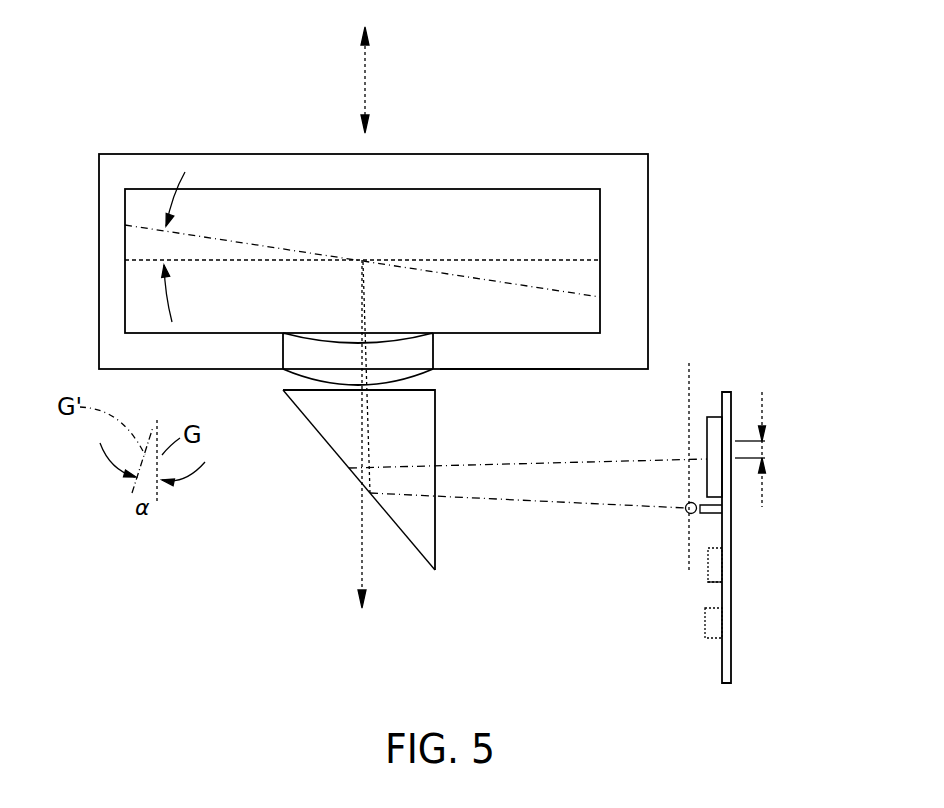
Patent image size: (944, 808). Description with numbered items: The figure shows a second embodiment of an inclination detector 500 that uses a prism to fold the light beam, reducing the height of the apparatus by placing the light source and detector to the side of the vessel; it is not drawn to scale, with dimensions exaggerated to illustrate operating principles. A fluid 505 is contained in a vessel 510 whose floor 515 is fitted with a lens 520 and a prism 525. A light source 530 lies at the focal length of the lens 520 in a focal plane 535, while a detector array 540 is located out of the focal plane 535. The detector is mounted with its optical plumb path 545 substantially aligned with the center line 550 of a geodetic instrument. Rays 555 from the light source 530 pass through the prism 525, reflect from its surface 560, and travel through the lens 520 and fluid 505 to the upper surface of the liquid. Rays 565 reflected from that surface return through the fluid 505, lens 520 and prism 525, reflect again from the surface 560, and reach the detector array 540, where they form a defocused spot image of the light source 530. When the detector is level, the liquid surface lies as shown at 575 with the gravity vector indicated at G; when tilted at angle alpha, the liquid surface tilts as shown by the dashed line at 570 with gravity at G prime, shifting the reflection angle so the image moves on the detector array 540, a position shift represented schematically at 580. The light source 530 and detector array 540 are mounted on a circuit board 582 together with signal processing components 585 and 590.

The inclination detector 500 is at (692, 291).
The fluid 505 is at (453, 315).
The vessel 510 is at (648, 231).
The floor 515 is at (506, 352).
The lens 520 is at (283, 370).
The prism 525 is at (315, 430).
The light source 530 is at (685, 512).
The focal plane 535 is at (689, 548).
The detector array 540 is at (715, 415).
The optical plumb path 545 is at (360, 535).
The center line 550 is at (365, 68).
The rays 555 is at (480, 498).
The surface 560 is at (415, 545).
The rays 565 is at (560, 462).
The upper surface of liquid when tilted 570 is at (245, 243).
The upper surface of liquid when level 575 is at (465, 262).
The position shift 580 is at (770, 447).
The circuit board 582 is at (722, 668).
The signal processing component 585 is at (705, 625).
The signal processing component 590 is at (707, 580).